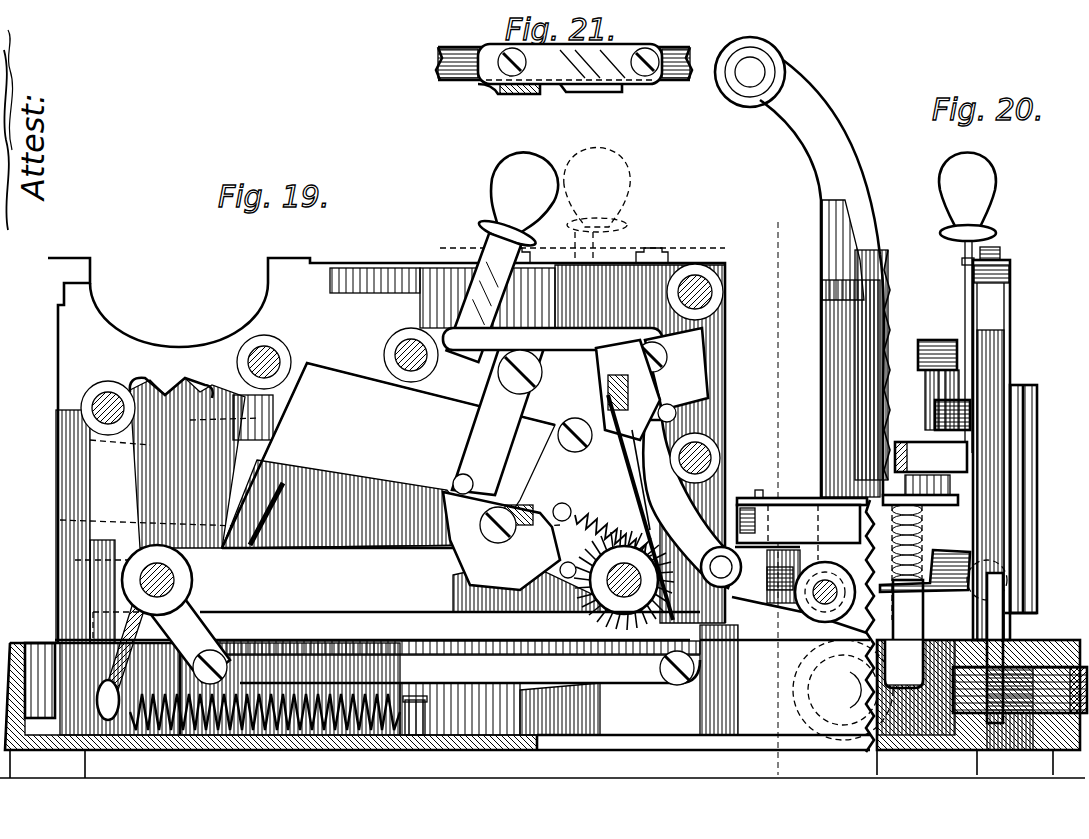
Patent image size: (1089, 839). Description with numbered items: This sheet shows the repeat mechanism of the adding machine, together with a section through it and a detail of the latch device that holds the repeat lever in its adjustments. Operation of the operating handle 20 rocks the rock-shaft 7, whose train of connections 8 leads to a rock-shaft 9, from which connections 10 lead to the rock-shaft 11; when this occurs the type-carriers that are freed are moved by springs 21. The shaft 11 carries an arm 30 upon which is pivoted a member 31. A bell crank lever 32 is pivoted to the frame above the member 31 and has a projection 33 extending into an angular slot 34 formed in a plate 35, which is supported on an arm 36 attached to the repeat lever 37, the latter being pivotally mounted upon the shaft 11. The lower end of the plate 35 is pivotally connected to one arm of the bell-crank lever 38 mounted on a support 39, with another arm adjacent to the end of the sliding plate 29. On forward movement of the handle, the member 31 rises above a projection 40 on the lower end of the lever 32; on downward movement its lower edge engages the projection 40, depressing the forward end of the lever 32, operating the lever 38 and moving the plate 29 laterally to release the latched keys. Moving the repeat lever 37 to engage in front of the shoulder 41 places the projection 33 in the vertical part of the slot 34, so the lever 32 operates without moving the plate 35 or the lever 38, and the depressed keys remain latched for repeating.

In FIG. 19, the rock-shaft 7 is at (848, 690).
In FIG. 19, the train of connections 8 is at (300, 482).
In FIG. 19, the rock-shaft 9 is at (180, 578).
In FIG. 19, the connections 10 is at (610, 655).
In FIG. 20, the connections 10 is at (935, 694).
In FIG. 19, the rock-shaft 11 is at (585, 600).
In FIG. 20, the rock-shaft 11 is at (970, 600).
In FIG. 19, the operating handle 20 is at (865, 282).
In FIG. 19, the springs 21 is at (720, 247).
In FIG. 19, the sliding plate 29 is at (833, 540).
In FIG. 20, the sliding plate 29 is at (925, 504).
In FIG. 19, the arm 30 is at (500, 565).
In FIG. 19, the member 31 is at (505, 505).
In FIG. 19, the bell crank lever 32 is at (470, 437).
In FIG. 20, the bell crank lever 32 is at (930, 382).
In FIG. 19, the projection 33 is at (700, 340).
In FIG. 20, the projection 33 is at (940, 338).
In FIG. 19, the angular slot 34 is at (560, 360).
In FIG. 19, the plate 35 is at (700, 397).
In FIG. 20, the plate 35 is at (930, 392).
In FIG. 19, the arm 36 is at (632, 448).
In FIG. 20, the arm 36 is at (970, 403).
In FIG. 21, the repeat lever 37 is at (520, 94).
In FIG. 19, the repeat lever 37 is at (540, 285).
In FIG. 20, the repeat lever 37 is at (1000, 242).
In FIG. 19, the bell-crank lever 38 is at (800, 614).
In FIG. 20, the bell-crank lever 38 is at (925, 571).
In FIG. 19, the support 39 is at (795, 640).
In FIG. 20, the support 39 is at (1000, 628).
In FIG. 19, the projection 40 is at (455, 480).
In FIG. 20, the projection 40 is at (912, 455).
In FIG. 21, the shoulder 41 is at (585, 92).
In FIG. 19, the shoulder 41 is at (612, 262).